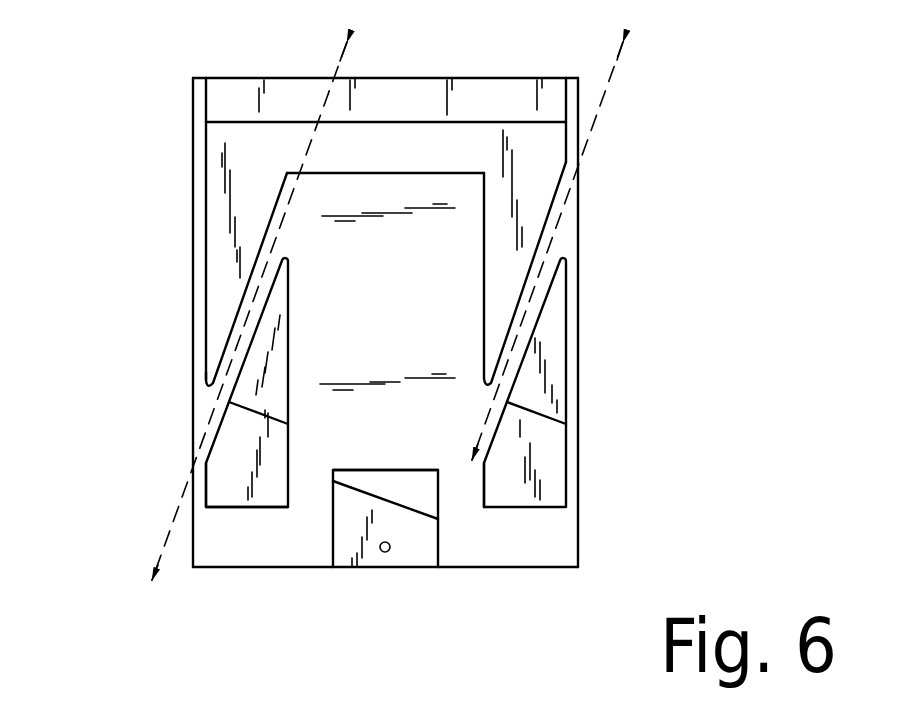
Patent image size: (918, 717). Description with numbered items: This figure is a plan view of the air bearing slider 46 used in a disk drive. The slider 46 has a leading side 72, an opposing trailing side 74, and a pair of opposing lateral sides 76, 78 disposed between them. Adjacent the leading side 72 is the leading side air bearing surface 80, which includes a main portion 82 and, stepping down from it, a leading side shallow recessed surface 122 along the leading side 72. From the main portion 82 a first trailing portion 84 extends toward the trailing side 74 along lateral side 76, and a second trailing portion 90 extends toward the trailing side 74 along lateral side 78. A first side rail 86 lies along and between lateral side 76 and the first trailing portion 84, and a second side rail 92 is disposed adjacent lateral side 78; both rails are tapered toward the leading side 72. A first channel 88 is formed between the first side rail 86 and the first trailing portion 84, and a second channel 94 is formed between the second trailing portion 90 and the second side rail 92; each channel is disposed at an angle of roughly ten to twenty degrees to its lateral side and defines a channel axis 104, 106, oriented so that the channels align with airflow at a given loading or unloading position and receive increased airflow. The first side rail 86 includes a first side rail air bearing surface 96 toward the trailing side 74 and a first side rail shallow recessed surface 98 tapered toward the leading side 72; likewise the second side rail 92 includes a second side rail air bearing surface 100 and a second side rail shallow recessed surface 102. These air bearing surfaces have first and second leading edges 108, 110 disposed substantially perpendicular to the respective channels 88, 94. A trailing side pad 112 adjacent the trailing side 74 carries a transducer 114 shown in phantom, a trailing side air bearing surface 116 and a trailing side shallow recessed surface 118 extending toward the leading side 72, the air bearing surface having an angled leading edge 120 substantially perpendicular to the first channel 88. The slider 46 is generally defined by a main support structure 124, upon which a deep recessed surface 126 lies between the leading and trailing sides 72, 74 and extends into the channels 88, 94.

The air bearing slider 46 is at (128, 51).
The leading side 72 is at (218, 76).
The trailing side 74 is at (206, 569).
The lateral side 76 is at (578, 536).
The lateral side 78 is at (193, 123).
The leading side air bearing surface 80 is at (481, 128).
The main portion 82 is at (540, 164).
The first trailing portion 84 is at (492, 351).
The first side rail 86 is at (545, 433).
The first channel 88 is at (565, 232).
The second trailing portion 90 is at (206, 290).
The second side rail 92 is at (226, 441).
The second channel 94 is at (209, 395).
The first side rail air bearing surface 96 is at (548, 462).
The first side rail shallow recessed surface 98 is at (554, 353).
The second side rail air bearing surface 100 is at (210, 482).
The second side rail shallow recessed surface 102 is at (280, 291).
The channel axis 104 is at (599, 116).
The channel axis 106 is at (310, 138).
The first leading edge 108 is at (530, 422).
The second leading edge 110 is at (256, 422).
The trailing side pad 112 is at (428, 545).
The transducer 114 is at (390, 548).
The trailing side air bearing surface 116 is at (354, 562).
The trailing side shallow recessed surface 118 is at (358, 480).
The leading edge 120 is at (406, 501).
The leading side shallow recessed surface 122 is at (296, 92).
The main support structure 124 is at (370, 260).
The deep recessed surface 126 is at (412, 262).